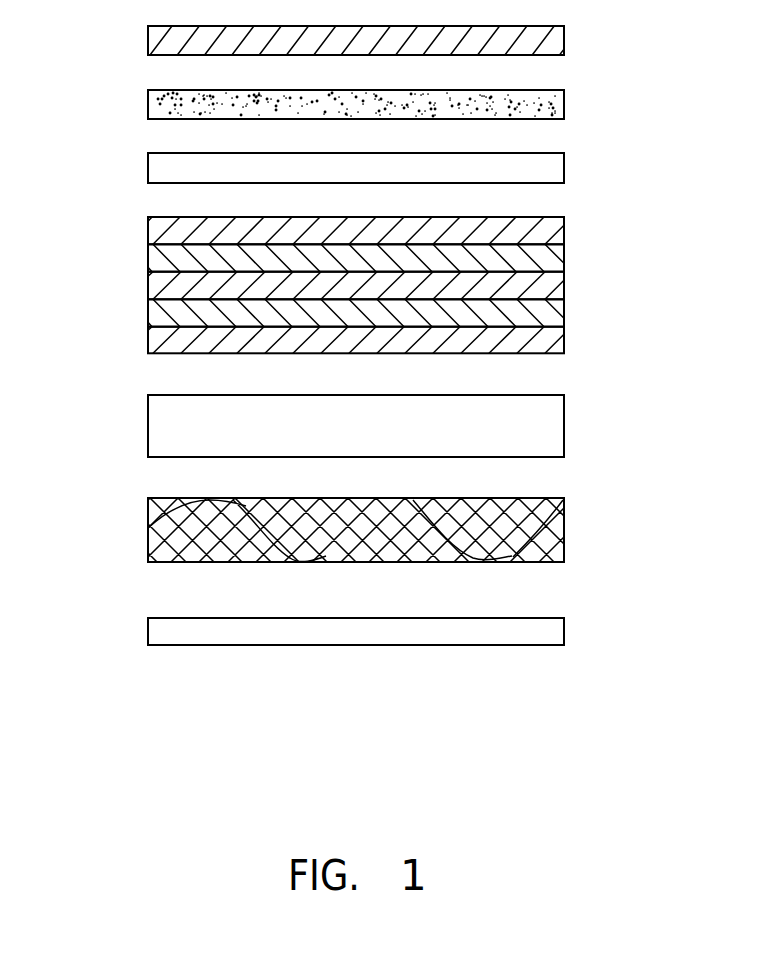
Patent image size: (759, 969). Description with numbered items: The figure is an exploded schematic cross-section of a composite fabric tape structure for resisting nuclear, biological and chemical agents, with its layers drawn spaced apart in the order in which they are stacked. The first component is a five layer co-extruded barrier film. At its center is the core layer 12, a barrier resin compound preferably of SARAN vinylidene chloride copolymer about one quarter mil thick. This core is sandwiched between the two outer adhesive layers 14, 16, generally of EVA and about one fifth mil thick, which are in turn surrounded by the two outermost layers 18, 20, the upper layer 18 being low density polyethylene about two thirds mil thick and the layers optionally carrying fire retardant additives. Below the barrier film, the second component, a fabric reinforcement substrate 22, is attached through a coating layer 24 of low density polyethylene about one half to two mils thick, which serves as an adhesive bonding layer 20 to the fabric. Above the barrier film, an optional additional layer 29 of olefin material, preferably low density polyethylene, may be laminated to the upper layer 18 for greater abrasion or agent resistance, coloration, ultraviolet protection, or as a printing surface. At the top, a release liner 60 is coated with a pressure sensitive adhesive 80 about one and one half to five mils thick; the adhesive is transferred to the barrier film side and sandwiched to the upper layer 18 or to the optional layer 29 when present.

The release liner 60 is at (564, 45).
The pressure sensitive adhesive 80 is at (564, 102).
The optional olefin layer 29 is at (564, 167).
The upper layer 18 is at (564, 230).
The outer adhesive layer 14 is at (564, 258).
The core layer 12 is at (564, 285).
The outer adhesive layer 16 is at (564, 313).
The outermost layer 20 is at (564, 340).
The coating layer 24 is at (564, 428).
The fabric reinforcement substrate 22 is at (564, 533).